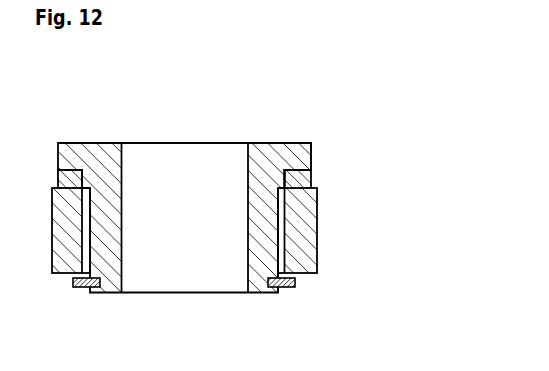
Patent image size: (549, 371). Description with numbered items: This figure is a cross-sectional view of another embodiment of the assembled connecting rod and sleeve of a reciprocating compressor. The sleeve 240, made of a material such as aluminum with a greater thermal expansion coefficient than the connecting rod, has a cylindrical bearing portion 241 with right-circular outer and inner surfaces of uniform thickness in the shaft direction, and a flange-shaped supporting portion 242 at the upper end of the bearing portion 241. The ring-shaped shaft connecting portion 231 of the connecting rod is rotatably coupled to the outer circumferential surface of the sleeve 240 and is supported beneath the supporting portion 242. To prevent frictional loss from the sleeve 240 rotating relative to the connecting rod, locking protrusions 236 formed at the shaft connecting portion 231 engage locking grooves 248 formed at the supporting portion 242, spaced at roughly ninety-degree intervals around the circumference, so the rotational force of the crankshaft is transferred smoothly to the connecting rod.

The sleeve 240 is at (222, 178).
The supporting portion 242 is at (275, 150).
The bearing portion 241 is at (267, 232).
The locking groove 248 is at (302, 172).
The locking protrusion 236 is at (298, 183).
The shaft connecting portion 231 is at (308, 207).